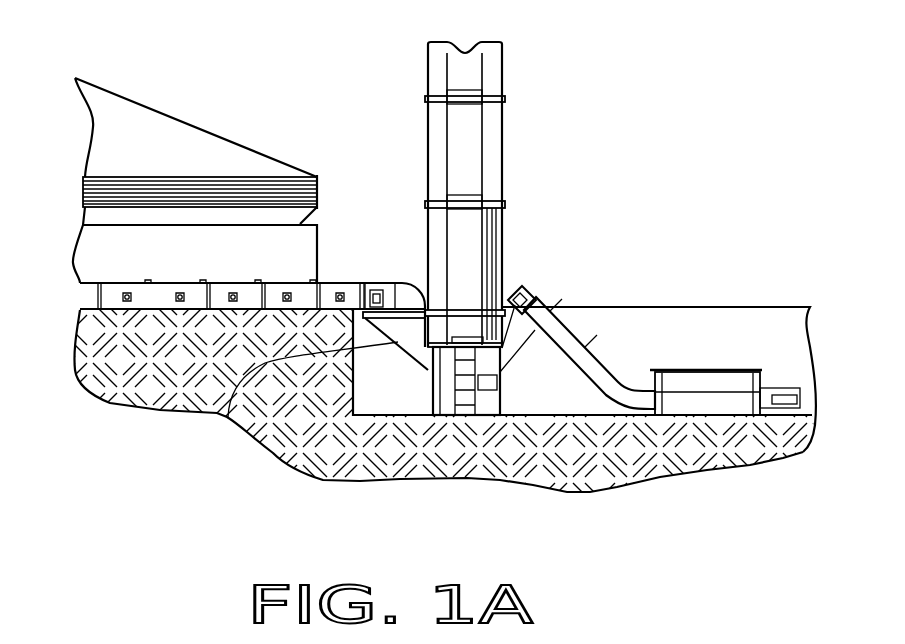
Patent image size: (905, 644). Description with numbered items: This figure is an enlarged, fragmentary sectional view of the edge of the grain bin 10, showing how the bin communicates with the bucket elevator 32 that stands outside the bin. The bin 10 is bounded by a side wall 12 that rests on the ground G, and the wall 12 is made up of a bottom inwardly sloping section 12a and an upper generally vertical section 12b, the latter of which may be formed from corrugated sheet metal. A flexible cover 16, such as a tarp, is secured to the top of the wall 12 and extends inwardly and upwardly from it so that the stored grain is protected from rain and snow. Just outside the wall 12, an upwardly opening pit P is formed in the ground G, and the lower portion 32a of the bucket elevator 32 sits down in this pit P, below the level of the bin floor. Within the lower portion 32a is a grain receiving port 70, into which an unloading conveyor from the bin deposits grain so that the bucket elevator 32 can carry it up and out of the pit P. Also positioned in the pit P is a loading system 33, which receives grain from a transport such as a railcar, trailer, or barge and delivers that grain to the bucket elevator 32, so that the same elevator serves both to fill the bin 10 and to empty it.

The grain bin 10 is at (200, 76).
The cover 16 is at (245, 145).
The side wall 12 is at (332, 193).
The bottom inwardly sloping section 12a is at (313, 209).
The upper generally vertical section 12b is at (318, 182).
The bucket elevator 32 is at (522, 93).
The lower portion 32a is at (415, 399).
The loading system 33 is at (600, 335).
The pit P is at (702, 335).
The ground G is at (125, 350).
The grain receiving port 70 is at (228, 417).